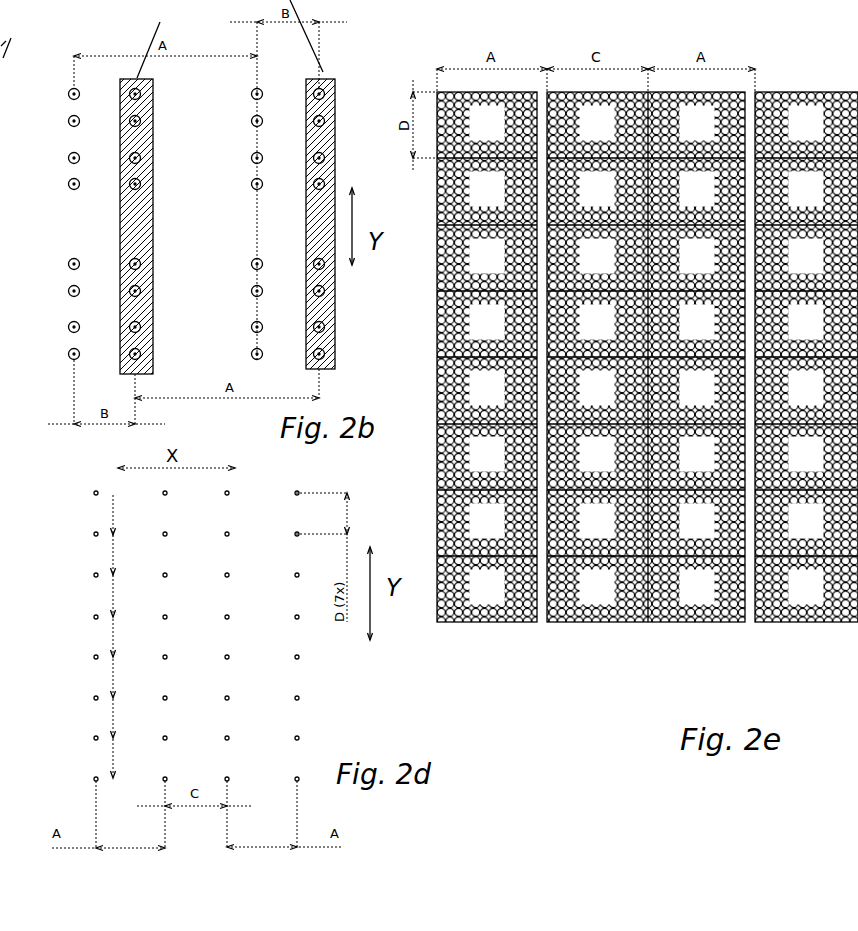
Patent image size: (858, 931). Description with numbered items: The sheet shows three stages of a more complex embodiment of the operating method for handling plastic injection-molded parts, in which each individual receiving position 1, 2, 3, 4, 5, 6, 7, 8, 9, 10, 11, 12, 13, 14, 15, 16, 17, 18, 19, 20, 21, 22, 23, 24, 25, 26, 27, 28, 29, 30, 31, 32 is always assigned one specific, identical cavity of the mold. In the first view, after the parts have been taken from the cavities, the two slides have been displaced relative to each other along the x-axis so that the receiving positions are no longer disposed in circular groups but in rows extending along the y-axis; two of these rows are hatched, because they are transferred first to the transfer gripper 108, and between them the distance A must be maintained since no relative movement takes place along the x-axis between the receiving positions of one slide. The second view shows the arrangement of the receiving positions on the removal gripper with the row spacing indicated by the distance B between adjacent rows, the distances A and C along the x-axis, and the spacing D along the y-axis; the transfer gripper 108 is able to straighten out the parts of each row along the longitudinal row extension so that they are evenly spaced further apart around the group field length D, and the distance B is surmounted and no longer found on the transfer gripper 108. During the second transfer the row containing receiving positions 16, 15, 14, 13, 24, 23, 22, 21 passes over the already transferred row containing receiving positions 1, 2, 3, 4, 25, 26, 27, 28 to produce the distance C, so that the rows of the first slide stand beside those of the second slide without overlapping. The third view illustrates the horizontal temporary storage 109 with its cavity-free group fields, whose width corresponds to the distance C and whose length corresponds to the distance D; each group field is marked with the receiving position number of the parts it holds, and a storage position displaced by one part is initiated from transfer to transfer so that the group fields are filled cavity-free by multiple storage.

In FIG. 2D, the transfer gripper 108 is at (245, 636).
In FIG. 2E, the temporary storage 109 is at (647, 403).
In FIG. 2B, the receiving position 1 is at (125, 94).
In FIG. 2D, the receiving position 1 is at (217, 493).
In FIG. 2E, the receiving position 1 is at (697, 123).
In FIG. 2B, the receiving position 2 is at (125, 121).
In FIG. 2D, the receiving position 2 is at (217, 534).
In FIG. 2E, the receiving position 2 is at (697, 189).
In FIG. 2B, the receiving position 3 is at (125, 158).
In FIG. 2D, the receiving position 3 is at (217, 575).
In FIG. 2E, the receiving position 3 is at (697, 256).
In FIG. 2B, the receiving position 4 is at (125, 184).
In FIG. 2D, the receiving position 4 is at (217, 617).
In FIG. 2E, the receiving position 4 is at (697, 322).
In FIG. 2B, the receiving position 5 is at (67, 184).
In FIG. 2D, the receiving position 5 is at (86, 617).
In FIG. 2E, the receiving position 5 is at (487, 322).
In FIG. 2B, the receiving position 6 is at (67, 158).
In FIG. 2D, the receiving position 6 is at (86, 575).
In FIG. 2E, the receiving position 6 is at (487, 256).
In FIG. 2B, the receiving position 7 is at (67, 121).
In FIG. 2D, the receiving position 7 is at (86, 534).
In FIG. 2E, the receiving position 7 is at (487, 189).
In FIG. 2B, the receiving position 8 is at (67, 94).
In FIG. 2D, the receiving position 8 is at (86, 493).
In FIG. 2E, the receiving position 8 is at (487, 123).
In FIG. 2B, the receiving position 9 is at (310, 94).
In FIG. 2D, the receiving position 9 is at (287, 493).
In FIG. 2E, the receiving position 9 is at (806, 123).
In FIG. 2B, the receiving position 10 is at (305, 121).
In FIG. 2D, the receiving position 10 is at (283, 534).
In FIG. 2E, the receiving position 10 is at (806, 189).
In FIG. 2B, the receiving position 11 is at (305, 158).
In FIG. 2D, the receiving position 11 is at (283, 575).
In FIG. 2E, the receiving position 11 is at (806, 256).
In FIG. 2B, the receiving position 12 is at (305, 184).
In FIG. 2D, the receiving position 12 is at (283, 617).
In FIG. 2E, the receiving position 12 is at (806, 322).
In FIG. 2B, the receiving position 13 is at (244, 184).
In FIG. 2D, the receiving position 13 is at (151, 617).
In FIG. 2E, the receiving position 13 is at (597, 322).
In FIG. 2B, the receiving position 14 is at (244, 158).
In FIG. 2D, the receiving position 14 is at (151, 575).
In FIG. 2E, the receiving position 14 is at (597, 256).
In FIG. 2B, the receiving position 15 is at (244, 121).
In FIG. 2D, the receiving position 15 is at (151, 534).
In FIG. 2E, the receiving position 15 is at (597, 189).
In FIG. 2B, the receiving position 16 is at (244, 94).
In FIG. 2D, the receiving position 16 is at (151, 493).
In FIG. 2E, the receiving position 16 is at (597, 123).
In FIG. 2B, the receiving position 17 is at (305, 264).
In FIG. 2D, the receiving position 17 is at (283, 657).
In FIG. 2E, the receiving position 17 is at (806, 388).
In FIG. 2B, the receiving position 18 is at (305, 291).
In FIG. 2D, the receiving position 18 is at (283, 698).
In FIG. 2E, the receiving position 18 is at (806, 454).
In FIG. 2B, the receiving position 19 is at (305, 327).
In FIG. 2D, the receiving position 19 is at (283, 738).
In FIG. 2E, the receiving position 19 is at (806, 521).
In FIG. 2B, the receiving position 20 is at (305, 354).
In FIG. 2D, the receiving position 20 is at (283, 779).
In FIG. 2E, the receiving position 20 is at (806, 587).
In FIG. 2B, the receiving position 21 is at (244, 354).
In FIG. 2D, the receiving position 21 is at (151, 779).
In FIG. 2E, the receiving position 21 is at (597, 587).
In FIG. 2B, the receiving position 22 is at (244, 327).
In FIG. 2D, the receiving position 22 is at (151, 738).
In FIG. 2E, the receiving position 22 is at (597, 521).
In FIG. 2B, the receiving position 23 is at (244, 291).
In FIG. 2D, the receiving position 23 is at (151, 698).
In FIG. 2E, the receiving position 23 is at (597, 454).
In FIG. 2B, the receiving position 24 is at (244, 264).
In FIG. 2D, the receiving position 24 is at (151, 657).
In FIG. 2E, the receiving position 24 is at (597, 388).
In FIG. 2B, the receiving position 25 is at (120, 264).
In FIG. 2D, the receiving position 25 is at (213, 657).
In FIG. 2E, the receiving position 25 is at (697, 388).
In FIG. 2B, the receiving position 26 is at (120, 291).
In FIG. 2D, the receiving position 26 is at (213, 698).
In FIG. 2E, the receiving position 26 is at (697, 454).
In FIG. 2B, the receiving position 27 is at (120, 327).
In FIG. 2D, the receiving position 27 is at (213, 738).
In FIG. 2E, the receiving position 27 is at (697, 521).
In FIG. 2B, the receiving position 28 is at (120, 354).
In FIG. 2D, the receiving position 28 is at (213, 779).
In FIG. 2E, the receiving position 28 is at (697, 587).
In FIG. 2B, the receiving position 29 is at (62, 354).
In FIG. 2D, the receiving position 29 is at (82, 779).
In FIG. 2E, the receiving position 29 is at (487, 587).
In FIG. 2B, the receiving position 30 is at (62, 327).
In FIG. 2D, the receiving position 30 is at (82, 738).
In FIG. 2E, the receiving position 30 is at (487, 521).
In FIG. 2B, the receiving position 31 is at (62, 291).
In FIG. 2D, the receiving position 31 is at (82, 698).
In FIG. 2E, the receiving position 31 is at (487, 454).
In FIG. 2B, the receiving position 32 is at (62, 264).
In FIG. 2D, the receiving position 32 is at (82, 657).
In FIG. 2E, the receiving position 32 is at (487, 388).